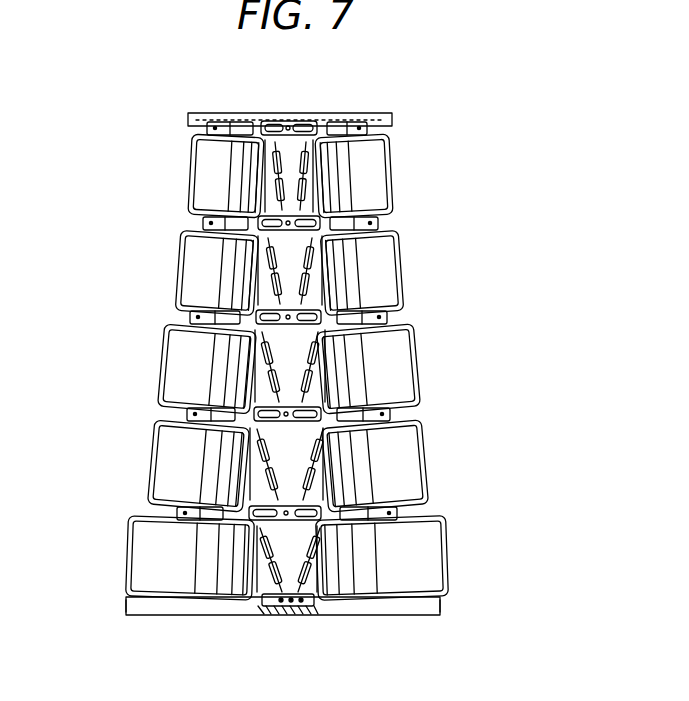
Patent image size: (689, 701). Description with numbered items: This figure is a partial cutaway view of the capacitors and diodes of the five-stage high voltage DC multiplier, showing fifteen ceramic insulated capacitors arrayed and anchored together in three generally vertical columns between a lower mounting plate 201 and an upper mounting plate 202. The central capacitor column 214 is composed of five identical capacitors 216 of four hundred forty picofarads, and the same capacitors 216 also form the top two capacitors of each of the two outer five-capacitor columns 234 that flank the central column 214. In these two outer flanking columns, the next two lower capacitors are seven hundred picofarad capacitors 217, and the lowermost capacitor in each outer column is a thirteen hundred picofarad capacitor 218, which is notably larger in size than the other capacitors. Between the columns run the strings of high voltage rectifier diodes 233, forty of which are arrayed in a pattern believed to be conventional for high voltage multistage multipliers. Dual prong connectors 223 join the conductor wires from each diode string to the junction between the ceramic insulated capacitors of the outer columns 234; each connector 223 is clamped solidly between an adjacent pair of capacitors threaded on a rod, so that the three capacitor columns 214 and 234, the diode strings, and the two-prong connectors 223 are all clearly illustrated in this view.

The lower mounting plate 201 is at (150, 618).
The upper mounting plate 202 is at (262, 113).
The central capacitor column 214 is at (277, 630).
The capacitors 216 is at (200, 178).
The 700 pf capacitors 217 is at (174, 372).
The 1300 pf capacitor 218 is at (130, 572).
The dual prong connectors 223 is at (206, 128).
The high voltage rectifier diodes 233 is at (306, 190).
The outer capacitor columns 234 is at (175, 632).